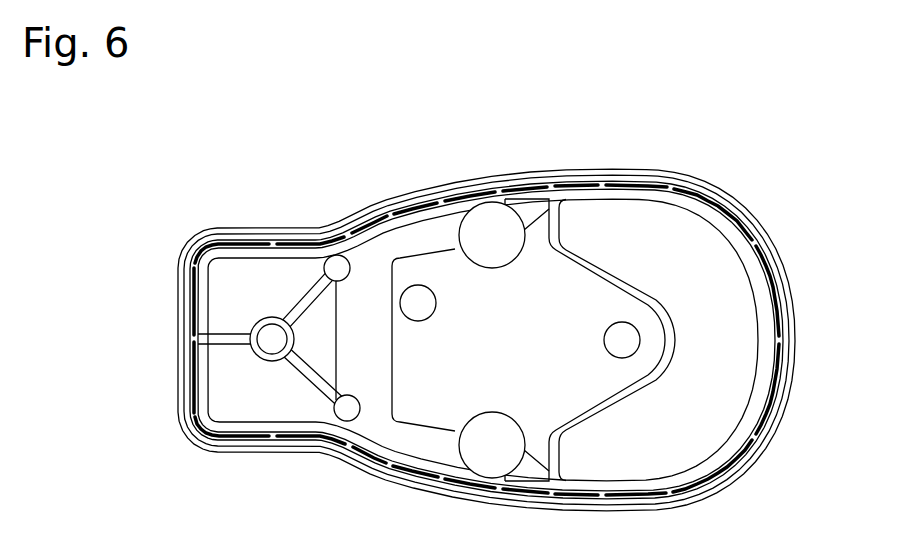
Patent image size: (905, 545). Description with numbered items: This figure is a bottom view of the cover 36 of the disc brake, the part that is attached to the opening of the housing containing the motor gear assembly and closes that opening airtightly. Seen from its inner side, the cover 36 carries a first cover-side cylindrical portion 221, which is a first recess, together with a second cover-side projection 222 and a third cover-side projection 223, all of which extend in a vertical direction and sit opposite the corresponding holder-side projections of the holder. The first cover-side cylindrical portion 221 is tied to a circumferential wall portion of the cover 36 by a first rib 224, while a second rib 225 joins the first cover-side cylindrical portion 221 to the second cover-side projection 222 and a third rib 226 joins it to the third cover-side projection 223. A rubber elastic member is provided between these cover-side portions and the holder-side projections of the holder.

The cover 36 is at (773, 222).
The first cover-side cylindrical portion 221 is at (272, 362).
The second cover-side projection 222 is at (347, 414).
The third cover-side projection 223 is at (336, 263).
The first rib 224 is at (224, 330).
The second rib 225 is at (309, 392).
The third rib 226 is at (304, 265).